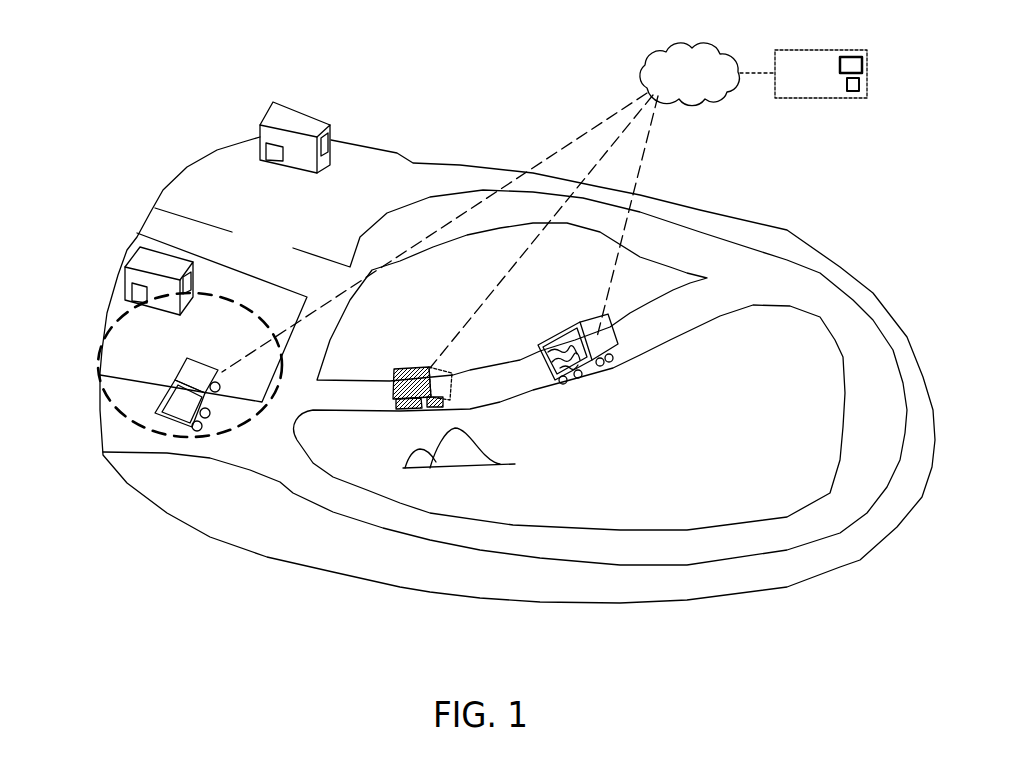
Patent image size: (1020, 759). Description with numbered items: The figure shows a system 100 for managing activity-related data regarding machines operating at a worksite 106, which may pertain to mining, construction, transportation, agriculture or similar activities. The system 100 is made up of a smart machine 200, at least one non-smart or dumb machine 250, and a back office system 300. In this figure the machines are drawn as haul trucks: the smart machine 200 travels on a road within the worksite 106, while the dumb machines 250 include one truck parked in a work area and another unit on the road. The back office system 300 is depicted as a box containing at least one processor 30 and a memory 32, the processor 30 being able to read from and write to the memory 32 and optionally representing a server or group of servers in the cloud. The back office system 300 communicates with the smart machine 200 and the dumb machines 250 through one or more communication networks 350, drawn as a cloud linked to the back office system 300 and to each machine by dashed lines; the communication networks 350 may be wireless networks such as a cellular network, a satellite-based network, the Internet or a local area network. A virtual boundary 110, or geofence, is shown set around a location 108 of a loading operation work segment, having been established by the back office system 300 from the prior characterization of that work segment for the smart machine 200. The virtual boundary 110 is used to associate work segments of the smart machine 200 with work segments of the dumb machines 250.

The system 100 is at (103, 99).
The worksite 106 is at (94, 288).
The location 108 is at (240, 322).
The virtual boundary 110 is at (123, 412).
The smart machine 200 is at (583, 322).
The dumb machines 250 is at (183, 363).
The back office system 300 is at (821, 74).
The processor 30 is at (862, 63).
The memory 32 is at (858, 92).
The communication networks 350 is at (498, 207).